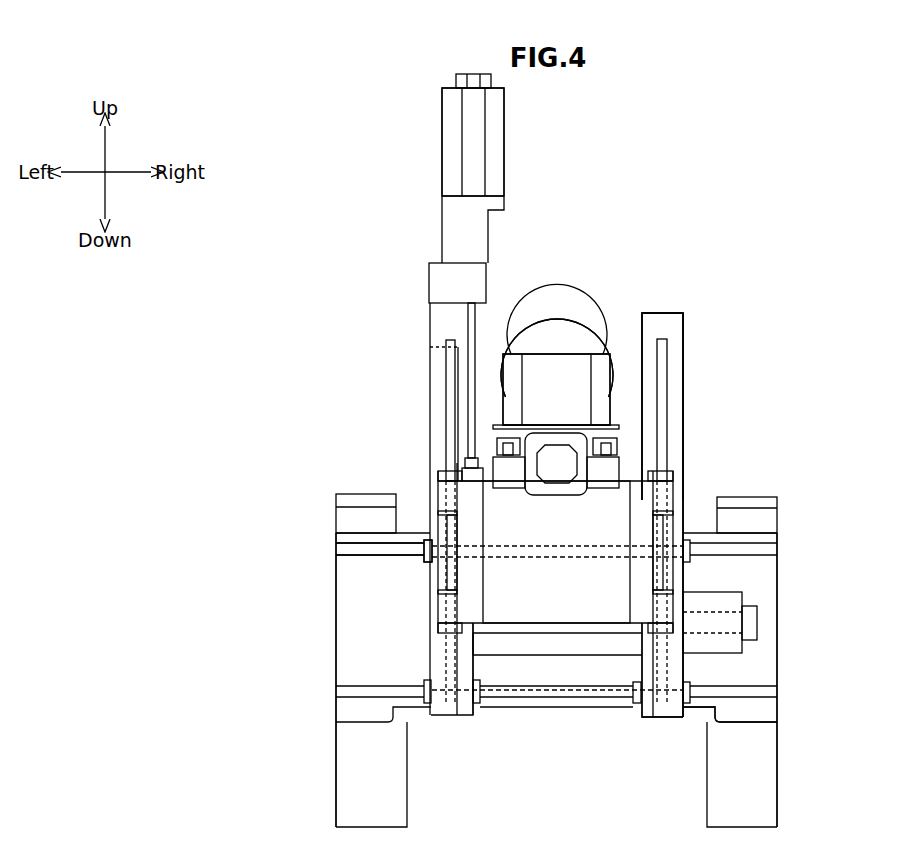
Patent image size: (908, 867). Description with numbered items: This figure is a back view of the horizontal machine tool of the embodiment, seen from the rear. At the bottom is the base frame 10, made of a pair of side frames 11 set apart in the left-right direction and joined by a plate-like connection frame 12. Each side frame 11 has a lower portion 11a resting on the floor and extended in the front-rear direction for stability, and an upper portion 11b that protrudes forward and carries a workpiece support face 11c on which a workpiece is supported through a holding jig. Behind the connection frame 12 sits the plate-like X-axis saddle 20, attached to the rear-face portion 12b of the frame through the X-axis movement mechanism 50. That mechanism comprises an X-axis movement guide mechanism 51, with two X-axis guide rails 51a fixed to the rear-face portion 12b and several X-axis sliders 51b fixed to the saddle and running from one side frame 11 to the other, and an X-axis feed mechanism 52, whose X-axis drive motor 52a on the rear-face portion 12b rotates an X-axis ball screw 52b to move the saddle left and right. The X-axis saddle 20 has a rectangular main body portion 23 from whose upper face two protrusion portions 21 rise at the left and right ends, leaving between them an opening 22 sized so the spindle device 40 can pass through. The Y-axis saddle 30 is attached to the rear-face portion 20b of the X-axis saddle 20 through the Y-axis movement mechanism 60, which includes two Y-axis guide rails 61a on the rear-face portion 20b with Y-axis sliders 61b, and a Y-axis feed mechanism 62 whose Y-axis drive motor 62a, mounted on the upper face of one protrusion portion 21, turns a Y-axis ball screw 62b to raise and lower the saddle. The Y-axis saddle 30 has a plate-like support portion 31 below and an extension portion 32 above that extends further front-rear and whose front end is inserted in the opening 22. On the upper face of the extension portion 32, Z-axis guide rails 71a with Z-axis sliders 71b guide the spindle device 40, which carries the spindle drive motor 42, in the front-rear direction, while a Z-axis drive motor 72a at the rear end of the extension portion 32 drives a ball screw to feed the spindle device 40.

The base frame 10 is at (781, 652).
The side frame 11 is at (352, 673).
The lower portion 11a is at (348, 773).
The upper portion 11b is at (352, 520).
The workpiece support face 11c is at (348, 492).
The connection frame 12 is at (593, 703).
The rear-face portion 12b is at (758, 672).
The X-axis saddle 20 is at (686, 382).
The rear-face portion 20b is at (676, 397).
The protrusion portion 21 is at (441, 314).
The opening 22 is at (634, 322).
The main body portion 23 is at (498, 645).
The Y-axis saddle 30 is at (528, 633).
The support portion 31 is at (558, 608).
The extension portion 32 is at (548, 421).
The spindle device 40 is at (606, 329).
The spindle drive motor 42 is at (577, 333).
The X-axis movement mechanism 50 is at (404, 622).
The X-axis movement guide mechanism 51 is at (413, 567).
The X-axis guide rail 51a is at (342, 552).
The X-axis slider 51b is at (423, 551).
The X-axis feed mechanism 52 is at (582, 639).
The X-axis drive motor 52a is at (725, 602).
The X-axis ball screw 52b is at (623, 630).
The Y-axis movement mechanism 60 is at (480, 317).
The Y-axis guide rail 61a is at (451, 372).
The Y-axis slider 61b is at (442, 474).
The Y-axis feed mechanism 62 is at (506, 171).
The Y-axis drive motor 62a is at (503, 130).
The Y-axis ball screw 62b is at (476, 343).
The Z-axis guide rail 71a is at (507, 451).
The Z-axis slider 71b is at (505, 437).
The Z-axis drive motor 72a is at (558, 486).